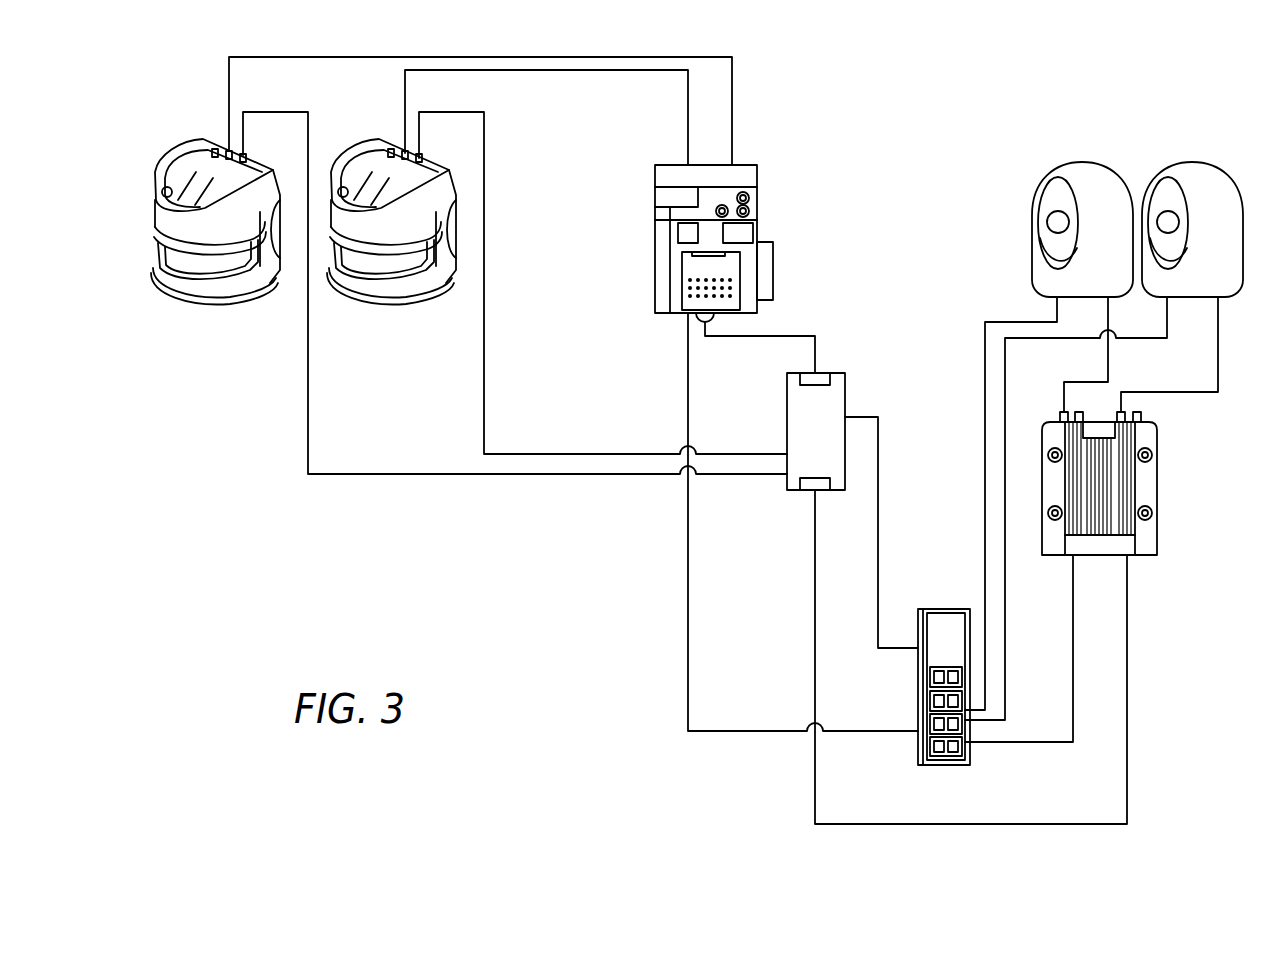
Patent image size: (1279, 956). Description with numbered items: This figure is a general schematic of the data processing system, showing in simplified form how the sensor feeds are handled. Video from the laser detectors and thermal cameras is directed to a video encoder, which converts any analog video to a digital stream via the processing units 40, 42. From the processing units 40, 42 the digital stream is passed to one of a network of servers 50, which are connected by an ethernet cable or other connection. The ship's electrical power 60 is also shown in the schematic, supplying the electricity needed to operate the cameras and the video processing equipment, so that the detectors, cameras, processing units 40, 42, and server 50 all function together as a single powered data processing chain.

The processing unit 40 is at (1158, 483).
The processing unit 42 is at (757, 205).
The server 50 is at (942, 608).
The ship's electrical power 60 is at (845, 397).